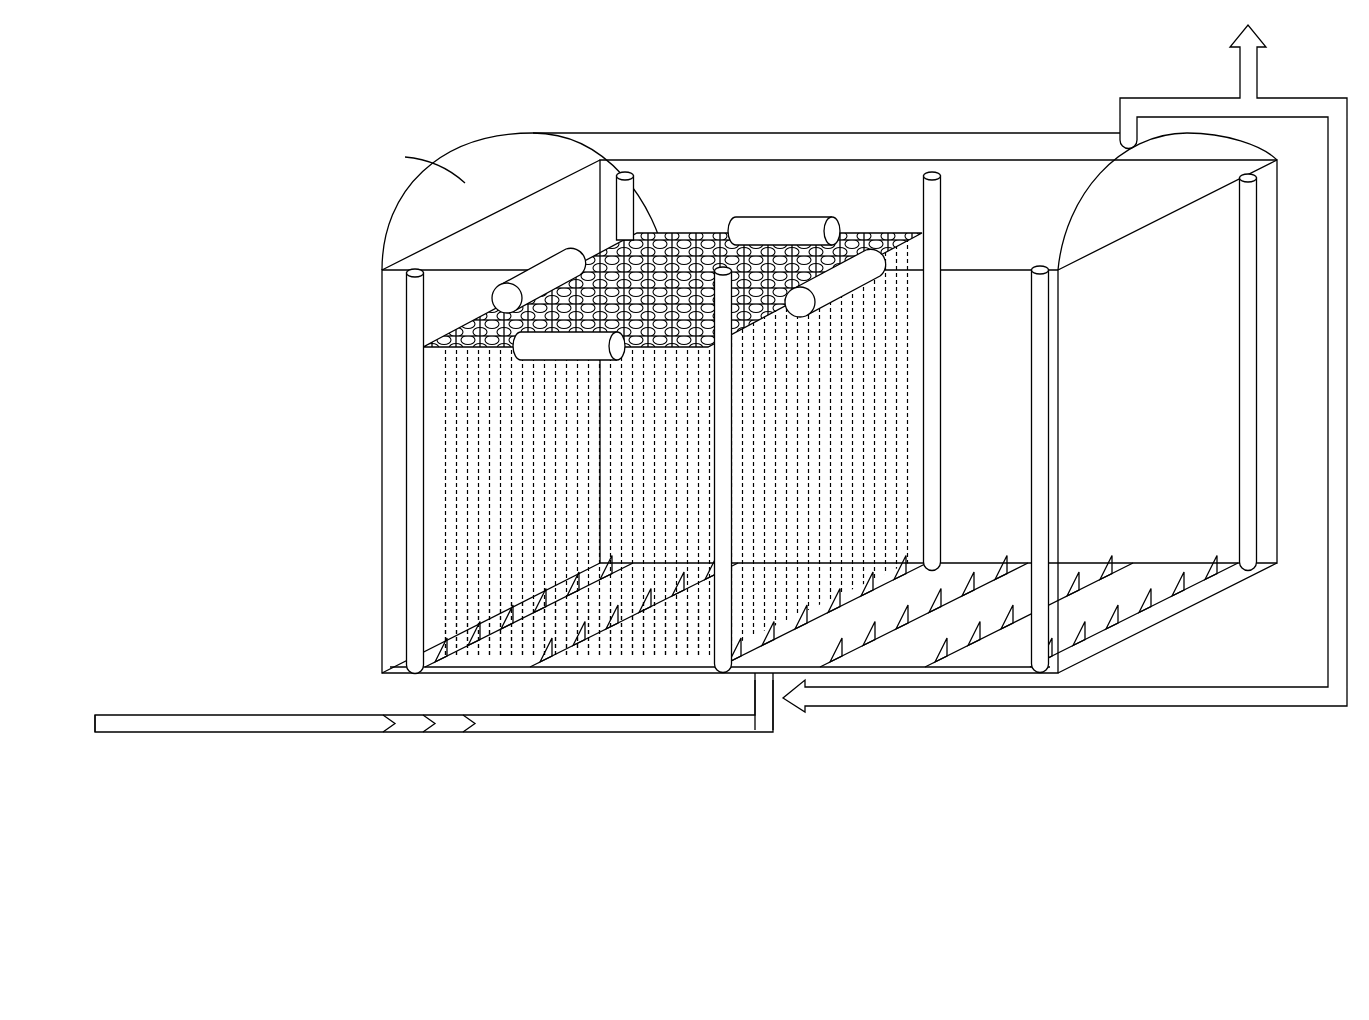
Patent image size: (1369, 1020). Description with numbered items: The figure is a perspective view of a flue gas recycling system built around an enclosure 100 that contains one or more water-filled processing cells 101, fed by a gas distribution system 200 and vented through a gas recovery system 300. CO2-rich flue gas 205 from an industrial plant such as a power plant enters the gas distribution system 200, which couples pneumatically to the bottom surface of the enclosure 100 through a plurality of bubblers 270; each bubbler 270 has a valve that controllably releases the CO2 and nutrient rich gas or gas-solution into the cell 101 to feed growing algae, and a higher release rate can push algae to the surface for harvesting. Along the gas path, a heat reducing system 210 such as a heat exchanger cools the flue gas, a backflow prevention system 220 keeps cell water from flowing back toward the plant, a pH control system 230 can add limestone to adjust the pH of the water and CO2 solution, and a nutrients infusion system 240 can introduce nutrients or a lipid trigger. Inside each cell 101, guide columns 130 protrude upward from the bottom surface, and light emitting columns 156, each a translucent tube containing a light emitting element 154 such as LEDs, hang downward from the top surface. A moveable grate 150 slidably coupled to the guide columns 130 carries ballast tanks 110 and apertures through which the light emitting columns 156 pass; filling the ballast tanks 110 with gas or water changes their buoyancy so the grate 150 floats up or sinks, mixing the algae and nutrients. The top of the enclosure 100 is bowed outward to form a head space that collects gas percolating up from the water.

The enclosure 100 is at (798, 87).
The processing cell 101 is at (688, 183).
The ballast tank 110 is at (495, 318).
The guide column 130 is at (407, 422).
The moveable grate 150 is at (662, 262).
The light emitting element 154 is at (462, 527).
The light emitting column 156 is at (462, 502).
The gas distribution system 200 is at (435, 735).
The flue gas 205 is at (95, 722).
The heat reducing system 210 is at (403, 734).
The backflow prevention system 220 is at (525, 734).
The pH control system 230 is at (764, 736).
The nutrients infusion system 240 is at (786, 743).
The bubbler 270 is at (865, 643).
The gas recovery system 300 is at (1293, 97).